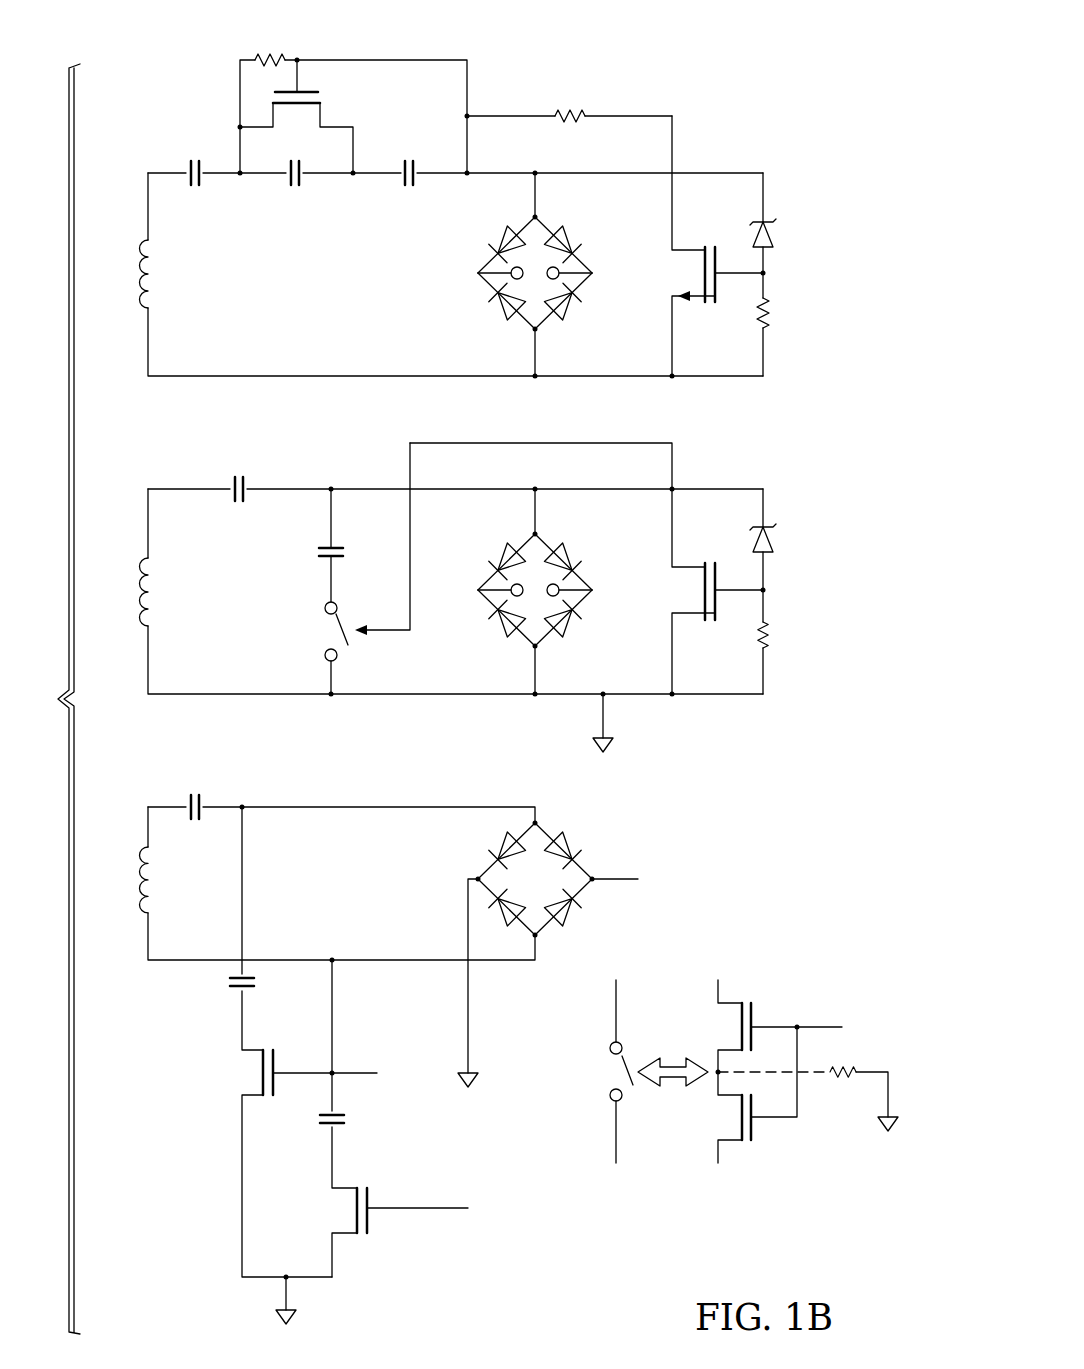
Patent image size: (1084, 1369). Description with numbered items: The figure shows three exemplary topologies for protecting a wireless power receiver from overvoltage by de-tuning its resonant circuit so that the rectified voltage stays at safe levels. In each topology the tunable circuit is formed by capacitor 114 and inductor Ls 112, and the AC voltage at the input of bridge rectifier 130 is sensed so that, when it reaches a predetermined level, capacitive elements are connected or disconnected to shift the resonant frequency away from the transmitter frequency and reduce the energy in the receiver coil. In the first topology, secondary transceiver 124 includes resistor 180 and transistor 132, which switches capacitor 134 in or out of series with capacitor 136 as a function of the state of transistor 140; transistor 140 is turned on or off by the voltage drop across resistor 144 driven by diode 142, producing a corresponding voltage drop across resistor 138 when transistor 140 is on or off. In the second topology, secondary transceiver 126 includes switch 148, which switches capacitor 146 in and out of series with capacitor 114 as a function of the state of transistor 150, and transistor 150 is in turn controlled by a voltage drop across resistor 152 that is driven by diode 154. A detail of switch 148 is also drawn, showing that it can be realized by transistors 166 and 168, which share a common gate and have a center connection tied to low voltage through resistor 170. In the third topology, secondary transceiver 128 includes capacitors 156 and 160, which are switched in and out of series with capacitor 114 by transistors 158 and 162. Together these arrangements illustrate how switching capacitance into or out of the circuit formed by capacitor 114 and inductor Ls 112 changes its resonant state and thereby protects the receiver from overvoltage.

The inductor Ls 112 is at (130, 868).
The capacitor 114 is at (196, 795).
The secondary transceiver 124 is at (853, 120).
The secondary transceiver 126 is at (853, 452).
The secondary transceiver 128 is at (860, 872).
The bridge rectifier 130 is at (478, 282).
The transistor 132 is at (312, 80).
The capacitor 134 is at (296, 186).
The capacitor 136 is at (407, 186).
The resistor 138 is at (570, 113).
The transistor 140 is at (720, 260).
The diode 142 is at (775, 232).
The resistor 144 is at (775, 318).
The capacitor 146 is at (318, 551).
The switch 148 is at (388, 630).
The transistor 150 is at (720, 578).
The resistor 152 is at (775, 640).
The diode 154 is at (775, 540).
The capacitor 156 is at (226, 982).
The transistor 158 is at (282, 1086).
The capacitor 160 is at (348, 1121).
The transistor 162 is at (370, 1224).
The transistor 166 is at (757, 1016).
The transistor 168 is at (757, 1128).
The resistor 170 is at (838, 1068).
The resistor 180 is at (265, 56).